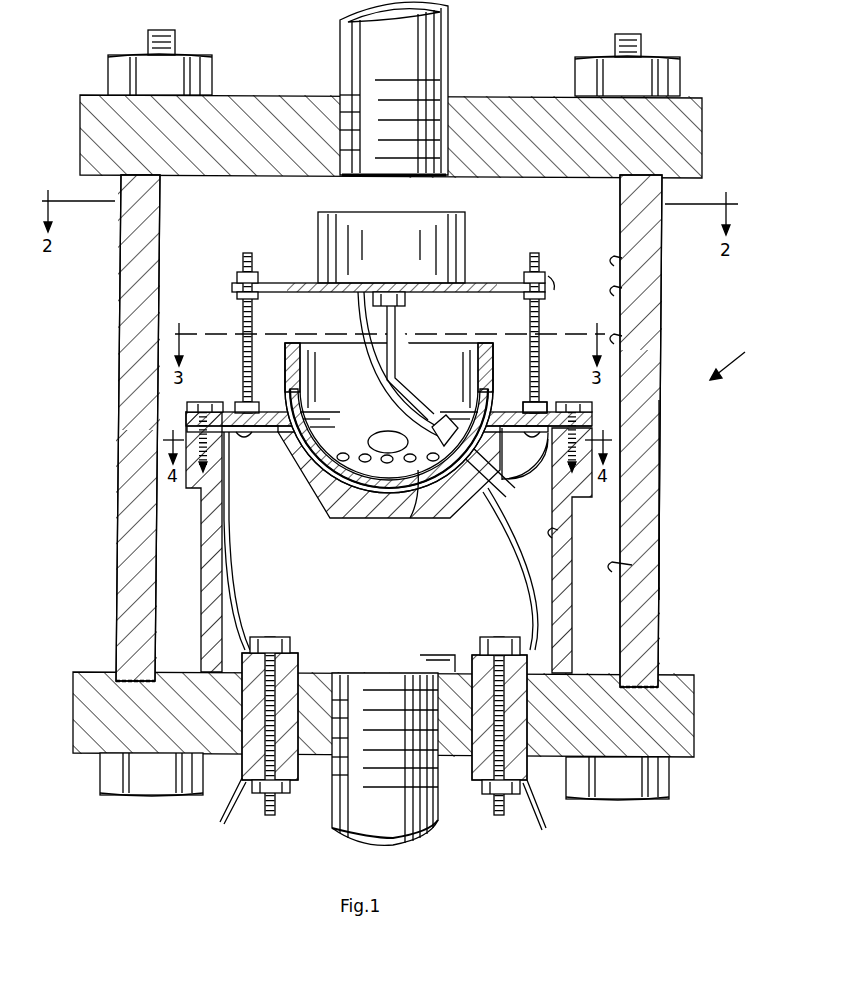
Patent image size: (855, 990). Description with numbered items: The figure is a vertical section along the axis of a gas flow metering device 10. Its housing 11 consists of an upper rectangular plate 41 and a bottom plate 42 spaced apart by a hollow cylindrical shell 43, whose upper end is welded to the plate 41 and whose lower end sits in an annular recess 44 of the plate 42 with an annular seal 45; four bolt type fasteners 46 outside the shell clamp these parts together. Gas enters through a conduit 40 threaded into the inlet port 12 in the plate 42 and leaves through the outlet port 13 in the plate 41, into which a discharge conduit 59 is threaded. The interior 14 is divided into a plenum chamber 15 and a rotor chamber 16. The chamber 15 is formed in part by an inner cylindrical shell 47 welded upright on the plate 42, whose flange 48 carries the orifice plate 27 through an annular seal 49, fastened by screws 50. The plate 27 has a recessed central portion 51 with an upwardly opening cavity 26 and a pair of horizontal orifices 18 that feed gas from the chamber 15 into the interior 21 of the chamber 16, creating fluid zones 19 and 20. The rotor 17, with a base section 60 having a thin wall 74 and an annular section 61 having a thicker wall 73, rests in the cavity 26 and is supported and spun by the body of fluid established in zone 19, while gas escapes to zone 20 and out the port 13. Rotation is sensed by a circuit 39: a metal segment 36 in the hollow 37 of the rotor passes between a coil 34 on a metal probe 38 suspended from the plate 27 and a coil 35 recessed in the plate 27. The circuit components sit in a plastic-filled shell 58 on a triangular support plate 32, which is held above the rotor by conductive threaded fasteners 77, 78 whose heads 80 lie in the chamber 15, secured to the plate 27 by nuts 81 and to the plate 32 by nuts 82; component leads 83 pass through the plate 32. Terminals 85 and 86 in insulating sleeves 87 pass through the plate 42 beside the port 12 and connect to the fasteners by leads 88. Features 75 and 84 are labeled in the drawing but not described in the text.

The gas flow metering device 10 is at (739, 358).
The housing 11 is at (660, 470).
The inlet port 12 is at (432, 671).
The outlet port 13 is at (347, 178).
The interior of the housing 14 is at (632, 565).
The plenum chamber 15 is at (558, 530).
The rotor chamber 16 is at (622, 258).
The rotor 17 is at (493, 348).
The orifices 18 is at (280, 460).
The fluid zone 19 is at (408, 520).
The fluid zone 20 is at (622, 336).
The interior of rotor chamber 21 is at (622, 288).
The cavity 26 is at (510, 456).
The orifice plate 27 is at (296, 492).
The triangular support plate 32 is at (485, 283).
The coil 34 is at (458, 420).
The coil 35 is at (470, 500).
The metal segment 36 is at (396, 422).
The hollow of the rotor 37 is at (295, 416).
The metal probe 38 is at (395, 370).
The circuit arrangement 39 is at (229, 565).
The conduit 40 is at (438, 822).
The upper plate 41 is at (703, 138).
The bottom plate 42 is at (694, 718).
The cylindrical shell component 43 is at (660, 520).
The annular recess 44 is at (135, 684).
The annular seal 45 is at (602, 672).
The bolt type fasteners 46 is at (212, 66).
The hollow cylindrical shell 47 is at (572, 620).
The flange 48 is at (186, 493).
The annular fluid tight seal 49 is at (588, 425).
The screw type fasteners 50 is at (206, 402).
The central portion of the orifice plate 51 is at (372, 518).
The hollow cylindrical shell 58 is at (465, 222).
The discharge conduit 59 is at (448, 42).
The base section 60 is at (370, 478).
The annular section 61 is at (285, 370).
The wall of the annular section 73 is at (493, 370).
The wall of the base 74 is at (378, 494).
The holes 75 is at (352, 455).
The threaded metal fastener 77 is at (243, 322).
The threaded metal fastener 78 is at (539, 322).
The fastener heads 80 is at (244, 440).
The nut 81 is at (540, 408).
The nuts 82 is at (549, 300).
The leads 83 is at (338, 296).
The fitting 84 is at (405, 303).
The terminal 85 is at (272, 815).
The terminal 86 is at (503, 815).
The insulating sleeves 87 is at (298, 672).
The electrical leads 88 is at (505, 512).